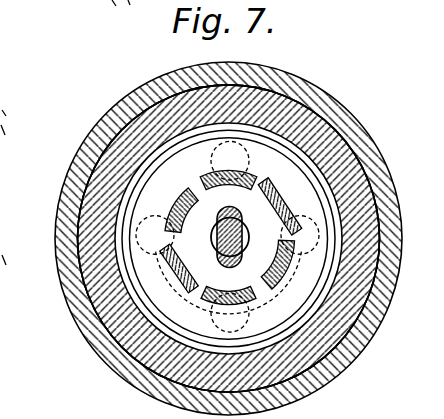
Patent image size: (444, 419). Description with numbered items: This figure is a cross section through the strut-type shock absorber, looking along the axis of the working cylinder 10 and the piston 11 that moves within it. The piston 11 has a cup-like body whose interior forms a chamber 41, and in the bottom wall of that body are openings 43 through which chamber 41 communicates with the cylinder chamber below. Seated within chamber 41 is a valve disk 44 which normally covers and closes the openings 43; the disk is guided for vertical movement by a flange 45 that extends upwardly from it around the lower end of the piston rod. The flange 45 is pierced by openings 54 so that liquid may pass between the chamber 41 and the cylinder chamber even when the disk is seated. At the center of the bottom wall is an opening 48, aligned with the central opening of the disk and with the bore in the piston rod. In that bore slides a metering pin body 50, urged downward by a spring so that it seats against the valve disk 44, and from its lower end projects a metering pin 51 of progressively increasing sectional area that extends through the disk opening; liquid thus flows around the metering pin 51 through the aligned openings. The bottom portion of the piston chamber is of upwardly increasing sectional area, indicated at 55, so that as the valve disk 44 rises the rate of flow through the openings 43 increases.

The working cylinder 10 is at (133, 105).
The piston 11 is at (322, 125).
The chamber 41 is at (136, 261).
The openings 43 is at (166, 254).
The valve disk 44 is at (120, 244).
The flange 45 is at (189, 192).
The opening 48 is at (240, 243).
The metering pin body 50 is at (246, 233).
The metering pin 51 is at (216, 232).
The openings 54 is at (269, 185).
The upwardly increasing sectional area 55 is at (99, 324).